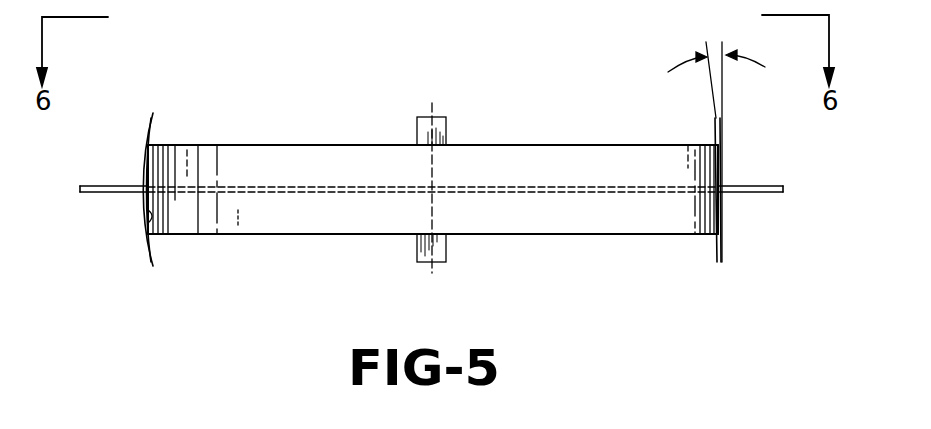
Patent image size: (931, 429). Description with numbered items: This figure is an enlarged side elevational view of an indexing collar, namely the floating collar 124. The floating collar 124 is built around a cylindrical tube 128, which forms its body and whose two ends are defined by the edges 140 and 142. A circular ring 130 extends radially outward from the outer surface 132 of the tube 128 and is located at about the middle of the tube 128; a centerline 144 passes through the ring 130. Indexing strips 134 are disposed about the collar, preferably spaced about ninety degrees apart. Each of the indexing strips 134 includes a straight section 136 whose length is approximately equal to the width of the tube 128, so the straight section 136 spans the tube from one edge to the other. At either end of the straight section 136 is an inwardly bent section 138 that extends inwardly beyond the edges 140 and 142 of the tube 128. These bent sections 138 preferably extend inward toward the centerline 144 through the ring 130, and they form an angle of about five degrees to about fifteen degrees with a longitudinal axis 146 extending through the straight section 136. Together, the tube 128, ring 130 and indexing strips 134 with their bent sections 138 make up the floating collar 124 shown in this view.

The floating collar 124 is at (257, 258).
The cylindrical tube 128 is at (572, 143).
The circular ring 130 is at (113, 185).
The outer surface 132 is at (248, 167).
The indexing strips 134 is at (147, 172).
The straight section 136 is at (146, 220).
The inwardly bent section 138 is at (151, 118).
The edge 140 is at (315, 143).
The edge 142 is at (314, 236).
The centerline 144 is at (433, 205).
The longitudinal axis 146 is at (723, 90).